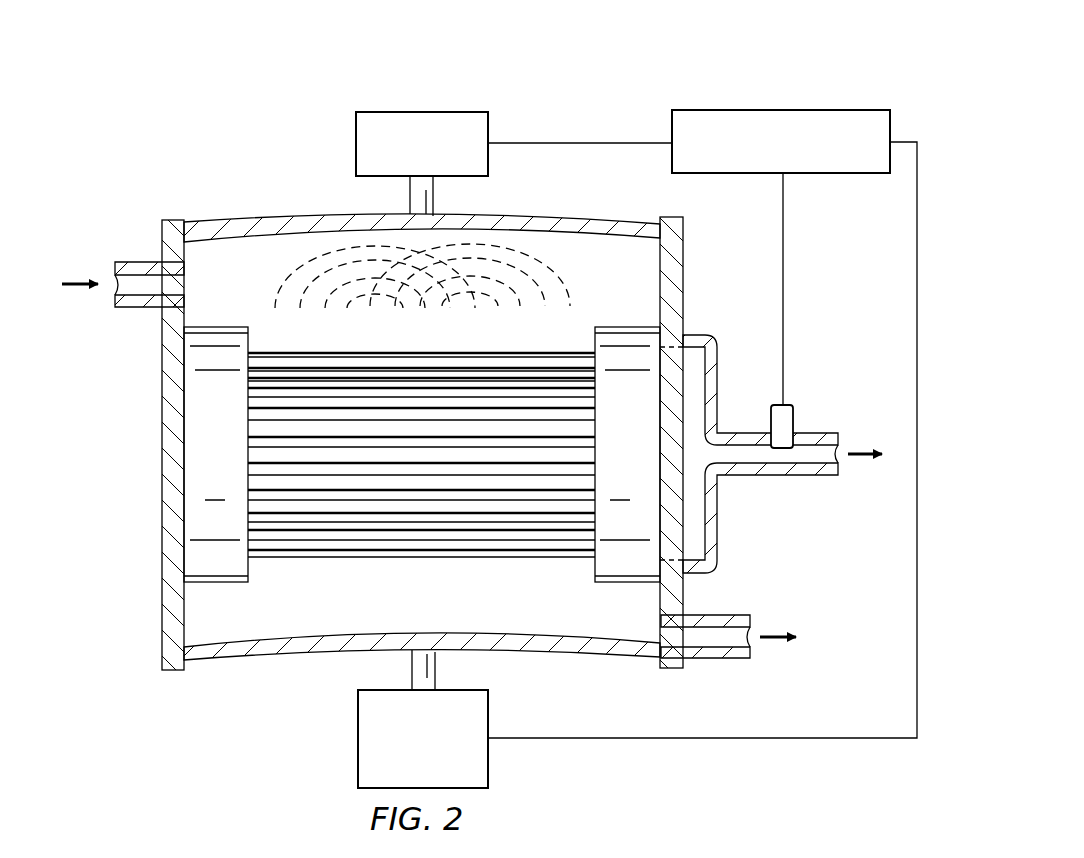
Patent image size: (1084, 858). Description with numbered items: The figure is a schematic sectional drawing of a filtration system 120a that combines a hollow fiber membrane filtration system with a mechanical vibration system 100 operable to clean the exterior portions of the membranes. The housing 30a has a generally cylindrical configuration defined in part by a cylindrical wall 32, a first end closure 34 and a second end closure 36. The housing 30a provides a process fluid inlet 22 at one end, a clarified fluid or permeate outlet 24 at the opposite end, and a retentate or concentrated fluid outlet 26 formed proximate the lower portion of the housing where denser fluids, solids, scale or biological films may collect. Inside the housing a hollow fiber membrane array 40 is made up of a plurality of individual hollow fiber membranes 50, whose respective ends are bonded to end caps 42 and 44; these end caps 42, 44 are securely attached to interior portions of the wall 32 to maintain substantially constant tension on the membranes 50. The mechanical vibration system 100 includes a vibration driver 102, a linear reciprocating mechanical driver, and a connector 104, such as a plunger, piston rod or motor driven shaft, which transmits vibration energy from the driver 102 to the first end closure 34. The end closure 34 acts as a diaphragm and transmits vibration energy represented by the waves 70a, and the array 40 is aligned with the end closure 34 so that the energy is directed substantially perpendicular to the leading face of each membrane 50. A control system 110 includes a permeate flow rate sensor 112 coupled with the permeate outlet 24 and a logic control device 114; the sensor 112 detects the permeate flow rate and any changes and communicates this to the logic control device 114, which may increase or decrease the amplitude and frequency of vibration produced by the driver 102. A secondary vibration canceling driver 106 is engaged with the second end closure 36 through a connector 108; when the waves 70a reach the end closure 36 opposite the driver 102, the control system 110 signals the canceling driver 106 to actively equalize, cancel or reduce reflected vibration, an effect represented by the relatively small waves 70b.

The process fluid inlet 22 is at (142, 262).
The clarified fluid outlet 24 is at (792, 478).
The retentate outlet 26 is at (736, 615).
The housing 30a is at (158, 484).
The wall 32 is at (686, 313).
The first end closure 34 is at (588, 224).
The second end closure 36 is at (388, 642).
The hollow fiber membrane array 40 is at (300, 572).
The end cap 42 is at (216, 583).
The end cap 44 is at (628, 326).
The hollow fiber membranes 50 is at (335, 518).
The vibration waves 70a is at (272, 290).
The small vibration waves 70b is at (360, 312).
The mechanical vibration system 100 is at (532, 100).
The vibration driver 102 is at (356, 128).
The connector 104 is at (410, 204).
The secondary vibration canceling driver 106 is at (358, 750).
The connector 108 is at (412, 670).
The control system 110 is at (886, 60).
The permeate flow rate sensor 112 is at (794, 418).
The logic control device 114 is at (808, 110).
The filtration system 120a is at (236, 163).